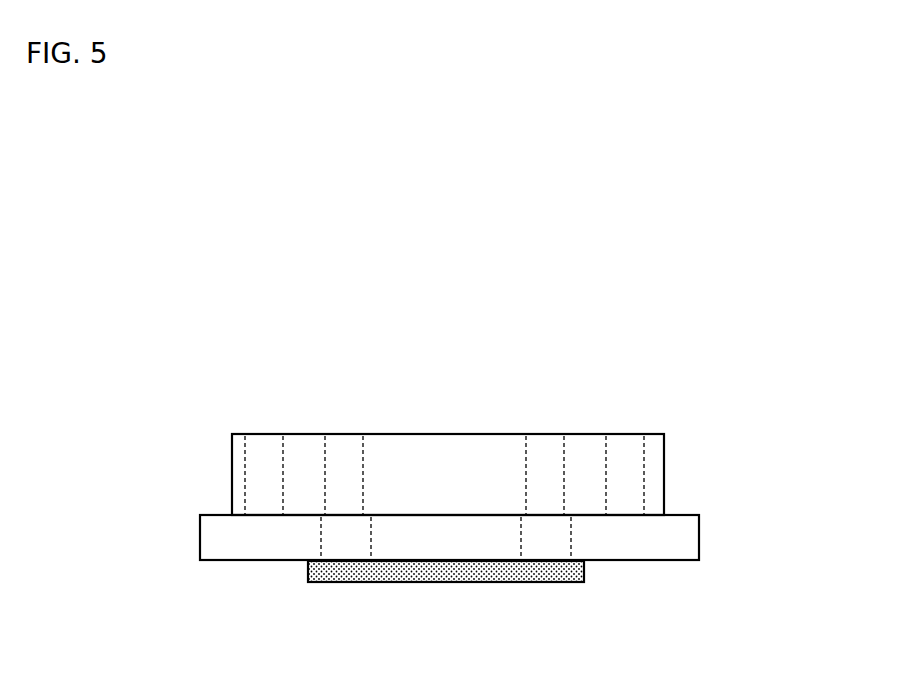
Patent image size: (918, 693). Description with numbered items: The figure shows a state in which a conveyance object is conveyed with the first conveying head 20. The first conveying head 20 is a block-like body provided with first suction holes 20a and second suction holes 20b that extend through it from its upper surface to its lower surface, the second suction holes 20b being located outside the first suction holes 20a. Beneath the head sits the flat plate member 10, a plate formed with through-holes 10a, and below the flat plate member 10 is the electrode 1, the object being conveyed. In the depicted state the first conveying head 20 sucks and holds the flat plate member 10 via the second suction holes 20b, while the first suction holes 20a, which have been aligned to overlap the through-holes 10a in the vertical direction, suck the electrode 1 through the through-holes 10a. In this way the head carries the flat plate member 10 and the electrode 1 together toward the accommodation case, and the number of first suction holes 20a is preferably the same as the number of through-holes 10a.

The electrode 1 is at (585, 572).
The flat plate member 10 is at (699, 540).
The through-holes 10a is at (342, 543).
The first conveying head 20 is at (665, 448).
The first suction holes 20a is at (348, 448).
The second suction holes 20b is at (264, 448).